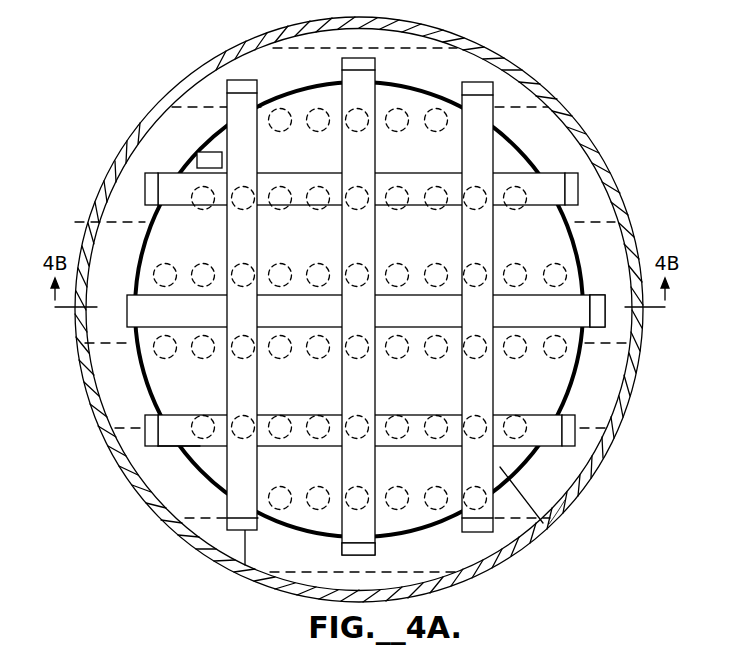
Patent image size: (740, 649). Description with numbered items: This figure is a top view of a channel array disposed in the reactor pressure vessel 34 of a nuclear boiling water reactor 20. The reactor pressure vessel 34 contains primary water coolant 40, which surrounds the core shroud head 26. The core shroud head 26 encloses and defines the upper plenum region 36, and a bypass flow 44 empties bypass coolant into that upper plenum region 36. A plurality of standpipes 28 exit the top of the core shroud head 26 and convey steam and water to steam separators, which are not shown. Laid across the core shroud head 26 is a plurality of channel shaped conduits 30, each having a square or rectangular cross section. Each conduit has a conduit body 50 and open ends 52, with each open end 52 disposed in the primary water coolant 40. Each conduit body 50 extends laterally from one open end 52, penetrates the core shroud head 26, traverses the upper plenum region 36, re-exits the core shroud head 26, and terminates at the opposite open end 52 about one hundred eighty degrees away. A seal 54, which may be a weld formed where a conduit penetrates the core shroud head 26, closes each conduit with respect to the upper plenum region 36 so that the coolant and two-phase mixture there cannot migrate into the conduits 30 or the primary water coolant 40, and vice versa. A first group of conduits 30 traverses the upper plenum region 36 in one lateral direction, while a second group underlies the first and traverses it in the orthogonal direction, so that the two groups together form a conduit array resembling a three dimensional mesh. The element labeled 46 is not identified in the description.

The nuclear boiling water reactor 20 is at (193, 545).
The core shroud head 26 is at (577, 378).
The standpipes 28 is at (200, 263).
The channel shaped conduits 30 is at (239, 93).
The reactor pressure vessel 34 is at (577, 497).
The upper plenum region 36 is at (543, 523).
The primary water coolant 40 is at (593, 417).
The bypass flow 44 is at (208, 152).
The vertical support beams 46 is at (243, 122).
The conduit body 50 is at (178, 449).
The open ends 52 is at (145, 186).
The seal 54 is at (587, 300).